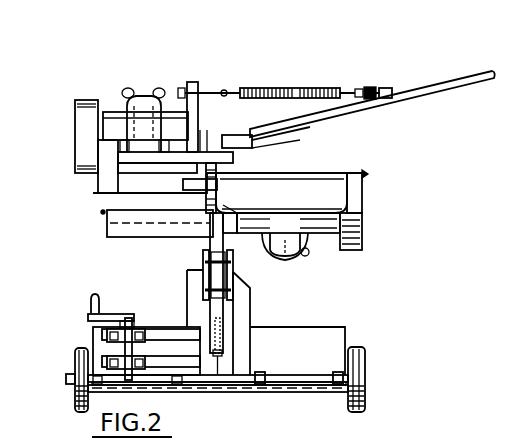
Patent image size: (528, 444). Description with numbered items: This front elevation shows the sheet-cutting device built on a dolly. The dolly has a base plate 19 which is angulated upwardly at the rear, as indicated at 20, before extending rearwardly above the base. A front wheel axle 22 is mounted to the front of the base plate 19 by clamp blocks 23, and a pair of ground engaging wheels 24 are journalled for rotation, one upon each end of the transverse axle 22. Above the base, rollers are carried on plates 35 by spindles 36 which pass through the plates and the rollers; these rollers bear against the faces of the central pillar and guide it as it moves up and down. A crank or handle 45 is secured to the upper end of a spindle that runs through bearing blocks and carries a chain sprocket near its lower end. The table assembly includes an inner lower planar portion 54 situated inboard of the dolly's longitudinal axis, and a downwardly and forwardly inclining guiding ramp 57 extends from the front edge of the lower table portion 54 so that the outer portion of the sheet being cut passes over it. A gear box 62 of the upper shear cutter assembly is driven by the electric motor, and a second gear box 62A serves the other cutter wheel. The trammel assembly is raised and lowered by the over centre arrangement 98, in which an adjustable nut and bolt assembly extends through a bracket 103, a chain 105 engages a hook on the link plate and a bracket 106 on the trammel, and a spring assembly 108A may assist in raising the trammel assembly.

The base plate 19 is at (246, 388).
The upwardly angulated rear portion 20 is at (308, 333).
The front wheel axle 22 is at (291, 380).
The clamp blocks 23 is at (256, 374).
The ground engaging wheels 24 is at (75, 370).
The plates 35 is at (204, 262).
The spindles 36 is at (204, 291).
The crank or handle 45 is at (90, 316).
The inner lower planar portion 54 is at (270, 175).
The guiding ramp 57 is at (305, 193).
The gear box 62 is at (110, 125).
The gear box 62A is at (272, 254).
The over centre arrangement 98 is at (242, 85).
The bracket 103 is at (186, 82).
The chain 105 is at (378, 86).
The bracket 106 is at (388, 90).
The spring assembly 108A is at (276, 88).